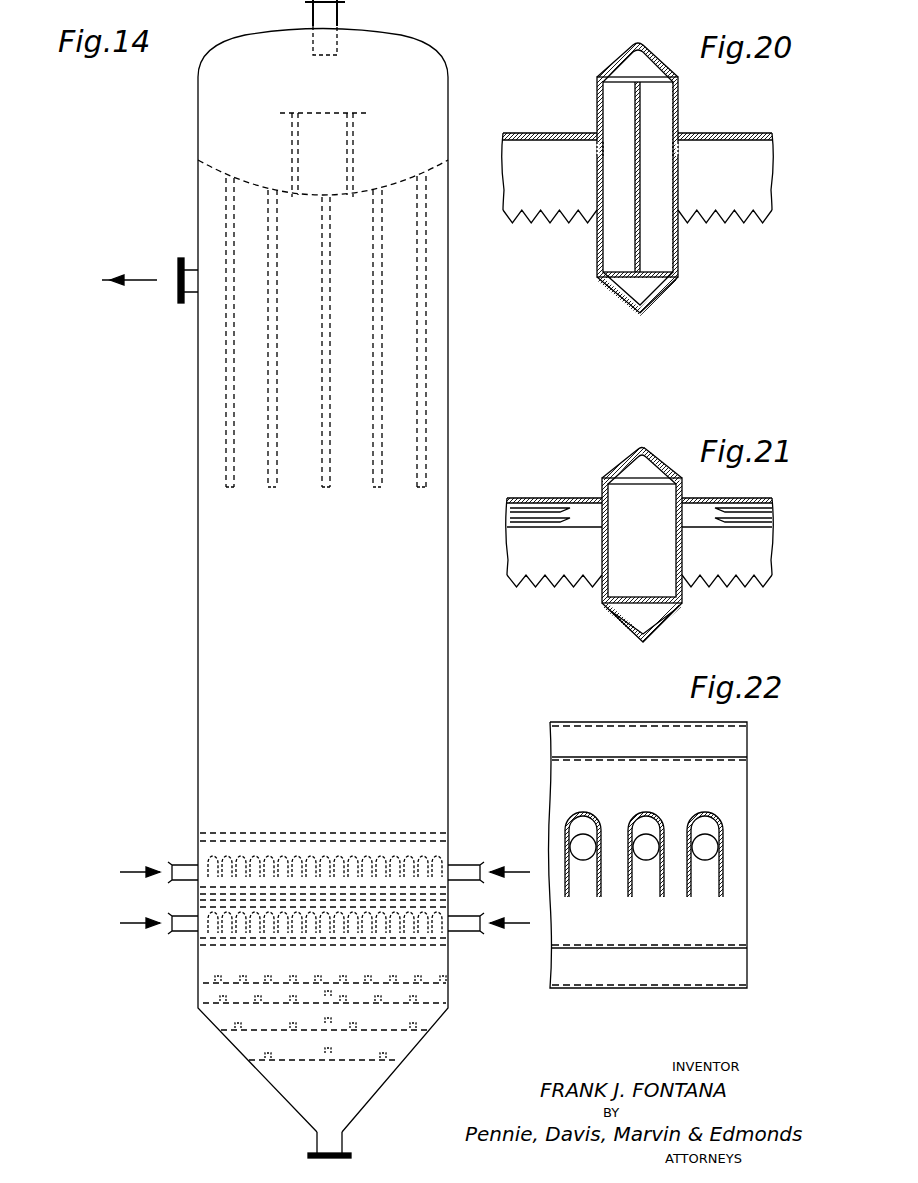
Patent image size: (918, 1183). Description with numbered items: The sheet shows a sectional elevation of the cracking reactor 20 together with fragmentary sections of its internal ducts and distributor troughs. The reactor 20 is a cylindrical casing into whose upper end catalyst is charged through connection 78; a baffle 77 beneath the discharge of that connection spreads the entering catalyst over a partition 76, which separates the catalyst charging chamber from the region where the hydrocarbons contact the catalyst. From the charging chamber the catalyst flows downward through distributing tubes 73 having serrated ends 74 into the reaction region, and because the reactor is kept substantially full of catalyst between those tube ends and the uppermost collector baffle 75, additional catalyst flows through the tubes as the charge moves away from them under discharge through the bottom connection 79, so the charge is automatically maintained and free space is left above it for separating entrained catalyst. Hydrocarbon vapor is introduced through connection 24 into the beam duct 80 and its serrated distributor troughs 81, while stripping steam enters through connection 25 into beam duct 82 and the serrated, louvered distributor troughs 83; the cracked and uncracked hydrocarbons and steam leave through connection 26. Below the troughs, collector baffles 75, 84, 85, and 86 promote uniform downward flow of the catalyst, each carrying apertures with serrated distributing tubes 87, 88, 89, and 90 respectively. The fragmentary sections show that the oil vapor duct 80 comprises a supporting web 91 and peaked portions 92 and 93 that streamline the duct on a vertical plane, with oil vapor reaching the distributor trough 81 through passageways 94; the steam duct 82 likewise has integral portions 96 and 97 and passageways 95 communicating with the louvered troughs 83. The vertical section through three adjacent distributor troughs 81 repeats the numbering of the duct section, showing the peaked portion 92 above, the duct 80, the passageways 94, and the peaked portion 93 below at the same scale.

In FIG. 14, the reactor 20 is at (451, 366).
In FIG. 14, the connection 24 is at (471, 865).
In FIG. 14, the connection 25 is at (476, 919).
In FIG. 14, the connection 26 is at (188, 272).
In FIG. 14, the distributing tubes 73 is at (365, 387).
In FIG. 14, the serrated ends 74 is at (370, 502).
In FIG. 14, the baffle 75 is at (455, 985).
In FIG. 14, the partition 76 is at (248, 183).
In FIG. 14, the baffle 77 is at (350, 113).
In FIG. 14, the connection 78 is at (340, 14).
In FIG. 14, the connection 79 is at (342, 1140).
In FIG. 14, the beam duct 80 is at (205, 848).
In FIG. 20, the beam duct 80 is at (680, 258).
In FIG. 22, the beam duct 80 is at (728, 790).
In FIG. 14, the distributor troughs 81 is at (282, 855).
In FIG. 20, the distributor troughs 81 is at (758, 135).
In FIG. 22, the distributor troughs 81 is at (720, 872).
In FIG. 14, the beam duct 82 is at (205, 915).
In FIG. 21, the beam duct 82 is at (683, 588).
In FIG. 14, the distributor troughs 83 is at (298, 930).
In FIG. 21, the distributor troughs 83 is at (762, 548).
In FIG. 14, the baffle 84 is at (450, 1010).
In FIG. 14, the baffle 85 is at (440, 1040).
In FIG. 14, the baffle 86 is at (405, 1065).
In FIG. 14, the distributing tubes 87 is at (205, 985).
In FIG. 14, the distributing tubes 88 is at (205, 1010).
In FIG. 14, the distributing tubes 89 is at (226, 1035).
In FIG. 14, the distributing tubes 90 is at (260, 1062).
In FIG. 20, the supporting web 91 is at (640, 118).
In FIG. 20, the peaked portion 92 is at (625, 64).
In FIG. 22, the peaked portion 92 is at (730, 740).
In FIG. 20, the peaked portion 93 is at (650, 300).
In FIG. 22, the peaked portion 93 is at (735, 970).
In FIG. 20, the passageways 94 is at (700, 170).
In FIG. 22, the passageways 94 is at (708, 845).
In FIG. 21, the passageways 95 is at (700, 540).
In FIG. 21, the peaked portion 96 is at (625, 467).
In FIG. 21, the peaked portion 97 is at (628, 618).